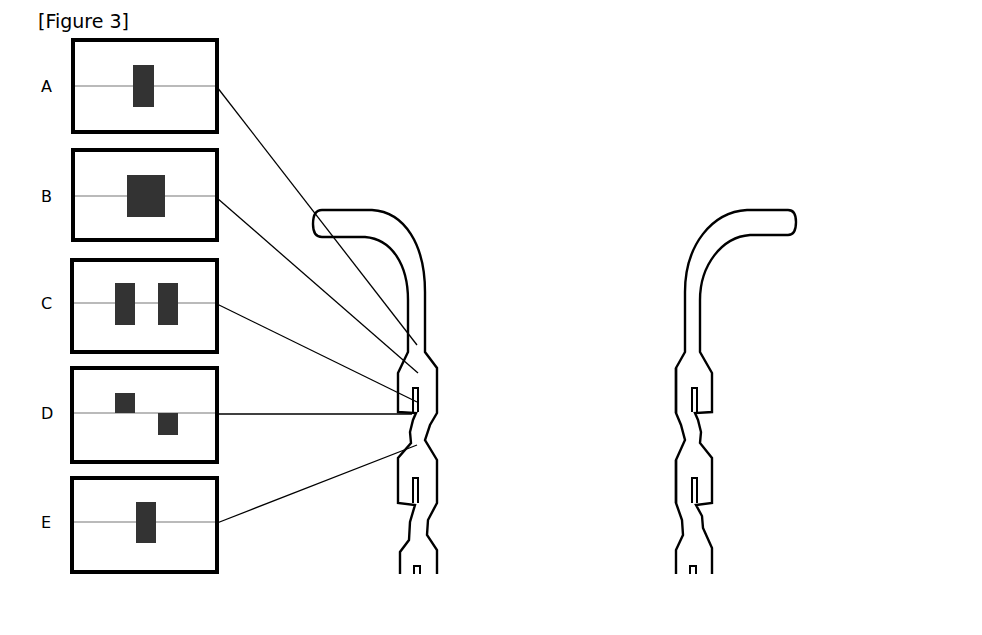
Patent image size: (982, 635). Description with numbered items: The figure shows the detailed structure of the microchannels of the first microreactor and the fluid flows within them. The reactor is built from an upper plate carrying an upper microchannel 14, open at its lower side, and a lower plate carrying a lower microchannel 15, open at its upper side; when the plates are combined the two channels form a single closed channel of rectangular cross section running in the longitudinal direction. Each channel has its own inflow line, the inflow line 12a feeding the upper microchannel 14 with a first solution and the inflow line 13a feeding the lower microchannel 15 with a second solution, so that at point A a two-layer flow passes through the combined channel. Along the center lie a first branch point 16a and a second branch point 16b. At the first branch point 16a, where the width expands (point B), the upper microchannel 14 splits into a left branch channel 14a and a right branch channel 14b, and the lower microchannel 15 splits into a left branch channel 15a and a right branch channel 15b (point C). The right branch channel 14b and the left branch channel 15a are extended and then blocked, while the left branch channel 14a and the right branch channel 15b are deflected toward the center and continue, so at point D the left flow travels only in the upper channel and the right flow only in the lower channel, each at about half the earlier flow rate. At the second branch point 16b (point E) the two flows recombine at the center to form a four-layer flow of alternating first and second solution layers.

The inflow line 12a is at (763, 210).
The inflow line 13a is at (343, 210).
The upper microchannel 14 is at (664, 238).
The left branch channel 14a is at (676, 394).
The right branch channel 14b is at (714, 394).
The lower microchannel 15 is at (440, 236).
The left branch channel 15a is at (400, 488).
The right branch channel 15b is at (440, 489).
The first branch point 16a is at (680, 350).
The second branch point 16b is at (693, 454).